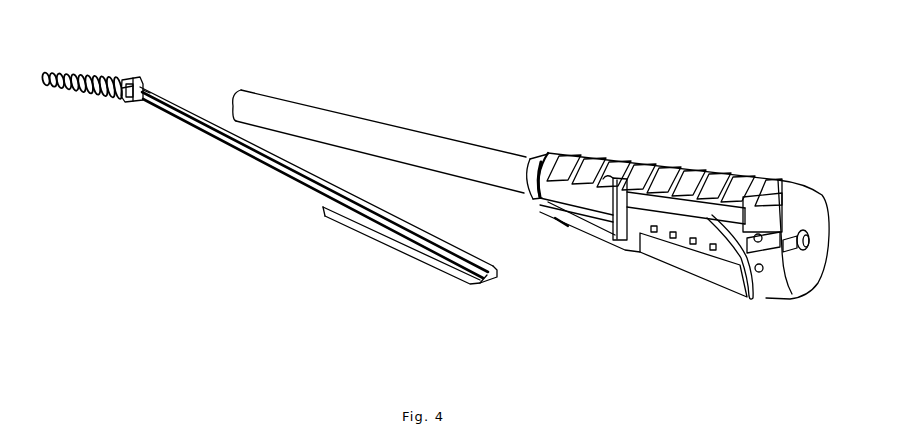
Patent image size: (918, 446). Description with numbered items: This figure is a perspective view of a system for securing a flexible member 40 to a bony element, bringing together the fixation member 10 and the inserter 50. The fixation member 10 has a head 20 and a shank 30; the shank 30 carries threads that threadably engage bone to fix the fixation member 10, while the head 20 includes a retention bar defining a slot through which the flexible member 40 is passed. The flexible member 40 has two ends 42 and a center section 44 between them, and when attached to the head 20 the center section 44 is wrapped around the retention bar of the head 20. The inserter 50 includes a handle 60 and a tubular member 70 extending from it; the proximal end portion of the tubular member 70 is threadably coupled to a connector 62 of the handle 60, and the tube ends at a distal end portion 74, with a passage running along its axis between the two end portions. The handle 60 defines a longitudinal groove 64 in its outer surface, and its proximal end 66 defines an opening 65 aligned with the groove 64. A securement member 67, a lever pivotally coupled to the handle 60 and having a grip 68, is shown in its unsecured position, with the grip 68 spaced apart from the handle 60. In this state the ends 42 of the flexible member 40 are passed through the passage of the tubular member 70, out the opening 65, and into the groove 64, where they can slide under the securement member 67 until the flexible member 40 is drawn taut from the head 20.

The fixation member 10 is at (102, 60).
The head 20 is at (128, 79).
The shank 30 is at (63, 69).
The flexible member 40 is at (209, 152).
The ends 42 is at (468, 283).
The center section 44 is at (150, 104).
The inserter 50 is at (573, 62).
The handle 60 is at (708, 138).
The connector 62 is at (530, 162).
The longitudinal groove 64 is at (752, 212).
The opening 65 is at (804, 231).
The proximal end 66 is at (813, 276).
The securement member 67 is at (750, 238).
The grip 68 is at (757, 291).
The tubular member 70 is at (360, 132).
The distal end portion 74 is at (259, 92).